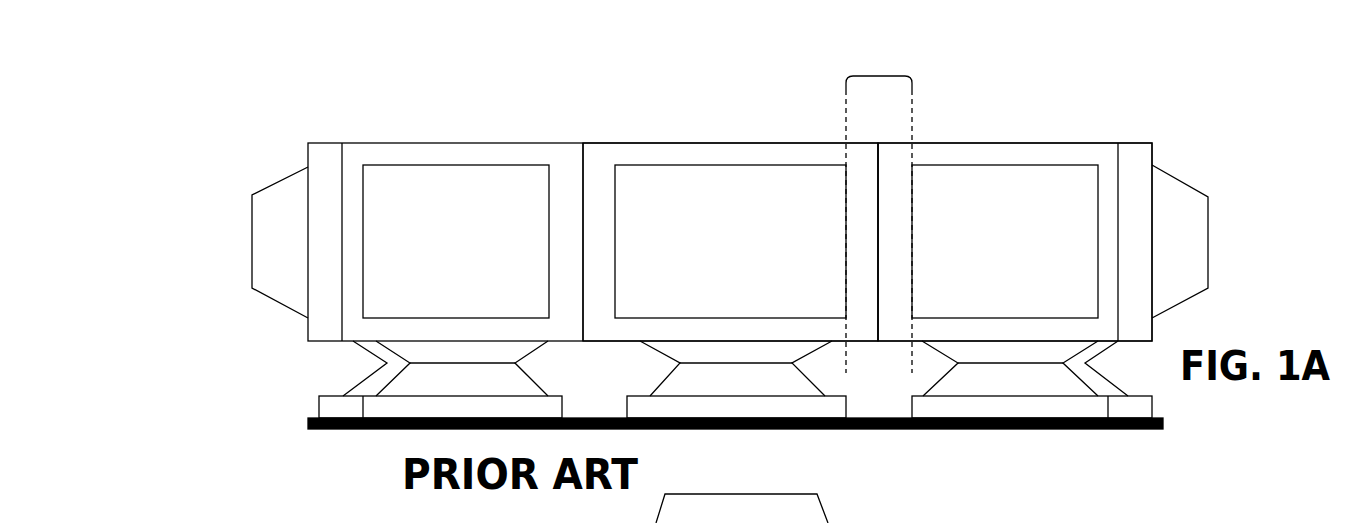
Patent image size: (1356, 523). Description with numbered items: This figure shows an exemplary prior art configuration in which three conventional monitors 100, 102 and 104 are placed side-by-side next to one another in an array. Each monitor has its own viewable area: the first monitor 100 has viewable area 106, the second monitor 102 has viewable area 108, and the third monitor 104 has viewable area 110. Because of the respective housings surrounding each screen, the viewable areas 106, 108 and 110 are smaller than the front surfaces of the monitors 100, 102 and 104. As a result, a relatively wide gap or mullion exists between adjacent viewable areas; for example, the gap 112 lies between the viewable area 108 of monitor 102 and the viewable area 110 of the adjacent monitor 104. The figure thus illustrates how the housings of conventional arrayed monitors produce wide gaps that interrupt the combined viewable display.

The monitor 100 is at (374, 143).
The monitor 102 is at (648, 143).
The monitor 104 is at (1118, 143).
The viewable area 106 is at (429, 165).
The viewable area 108 is at (698, 165).
The viewable area 110 is at (1007, 165).
The gap 112 is at (890, 76).